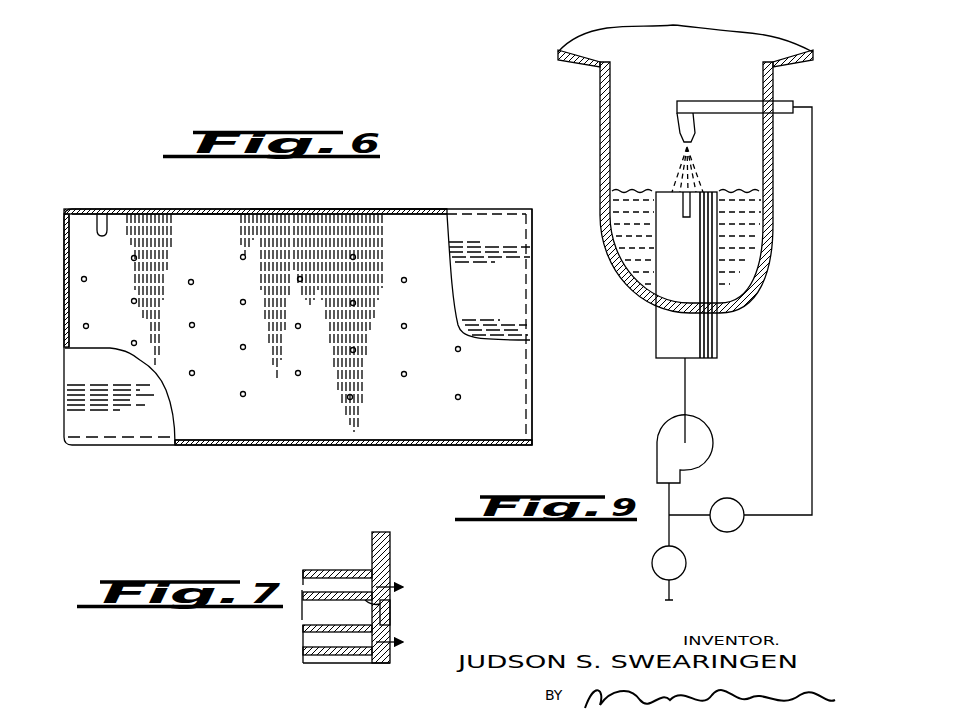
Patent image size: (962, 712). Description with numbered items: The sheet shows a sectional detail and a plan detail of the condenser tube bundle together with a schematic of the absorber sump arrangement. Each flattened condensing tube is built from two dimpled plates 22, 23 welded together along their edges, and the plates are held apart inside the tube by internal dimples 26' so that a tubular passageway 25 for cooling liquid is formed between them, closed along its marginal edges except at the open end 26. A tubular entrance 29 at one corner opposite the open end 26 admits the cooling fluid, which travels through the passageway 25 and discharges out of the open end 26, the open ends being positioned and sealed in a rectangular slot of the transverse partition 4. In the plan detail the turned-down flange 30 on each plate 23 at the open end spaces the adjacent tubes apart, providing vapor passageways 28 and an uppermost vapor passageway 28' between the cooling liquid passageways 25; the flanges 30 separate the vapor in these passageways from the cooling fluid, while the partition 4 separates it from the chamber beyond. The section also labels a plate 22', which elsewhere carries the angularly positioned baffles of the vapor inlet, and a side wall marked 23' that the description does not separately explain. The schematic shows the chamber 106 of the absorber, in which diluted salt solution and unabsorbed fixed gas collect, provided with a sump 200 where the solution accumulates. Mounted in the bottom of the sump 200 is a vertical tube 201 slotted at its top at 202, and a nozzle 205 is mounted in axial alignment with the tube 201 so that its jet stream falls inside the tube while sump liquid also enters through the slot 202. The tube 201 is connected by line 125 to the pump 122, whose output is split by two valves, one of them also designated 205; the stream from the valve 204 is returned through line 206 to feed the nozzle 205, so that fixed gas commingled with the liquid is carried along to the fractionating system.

In FIG. 7, the transverse partition 4 is at (390, 551).
In FIG. 6, the dimpled plate 22 is at (488, 277).
In FIG. 7, the dimpled plate 22 is at (330, 558).
In FIG. 6, the plate 22' is at (348, 195).
In FIG. 6, the dimpled plate 23 is at (223, 199).
In FIG. 7, the dimpled plate 23 is at (400, 612).
In FIG. 6, the side wall of panel 23' is at (43, 280).
In FIG. 6, the tubular passageway 25 is at (176, 213).
In FIG. 7, the tubular passageway 25 is at (343, 585).
In FIG. 6, the open end 26 is at (554, 327).
In FIG. 7, the open end 26 is at (410, 573).
In FIG. 6, the internal dimples 26' is at (271, 318).
In FIG. 7, the vapor passageway 28 is at (342, 670).
In FIG. 7, the uppermost vapor passageway 28' is at (268, 621).
In FIG. 6, the tubular entrance 29 is at (108, 214).
In FIG. 6, the turned-down flange 30 is at (528, 224).
In FIG. 7, the turned-down flange 30 is at (390, 618).
In FIG. 9, the absorber chamber 106 is at (687, 36).
In FIG. 9, the pump 122 is at (707, 440).
In FIG. 9, the line 125 is at (687, 397).
In FIG. 9, the sump 200 is at (600, 115).
In FIG. 9, the vertical tube 201 is at (717, 338).
In FIG. 9, the slot 202 is at (687, 220).
In FIG. 9, the valve 204 is at (737, 530).
In FIG. 9, the nozzle 205 is at (700, 103).
In FIG. 9, the line 206 is at (812, 375).